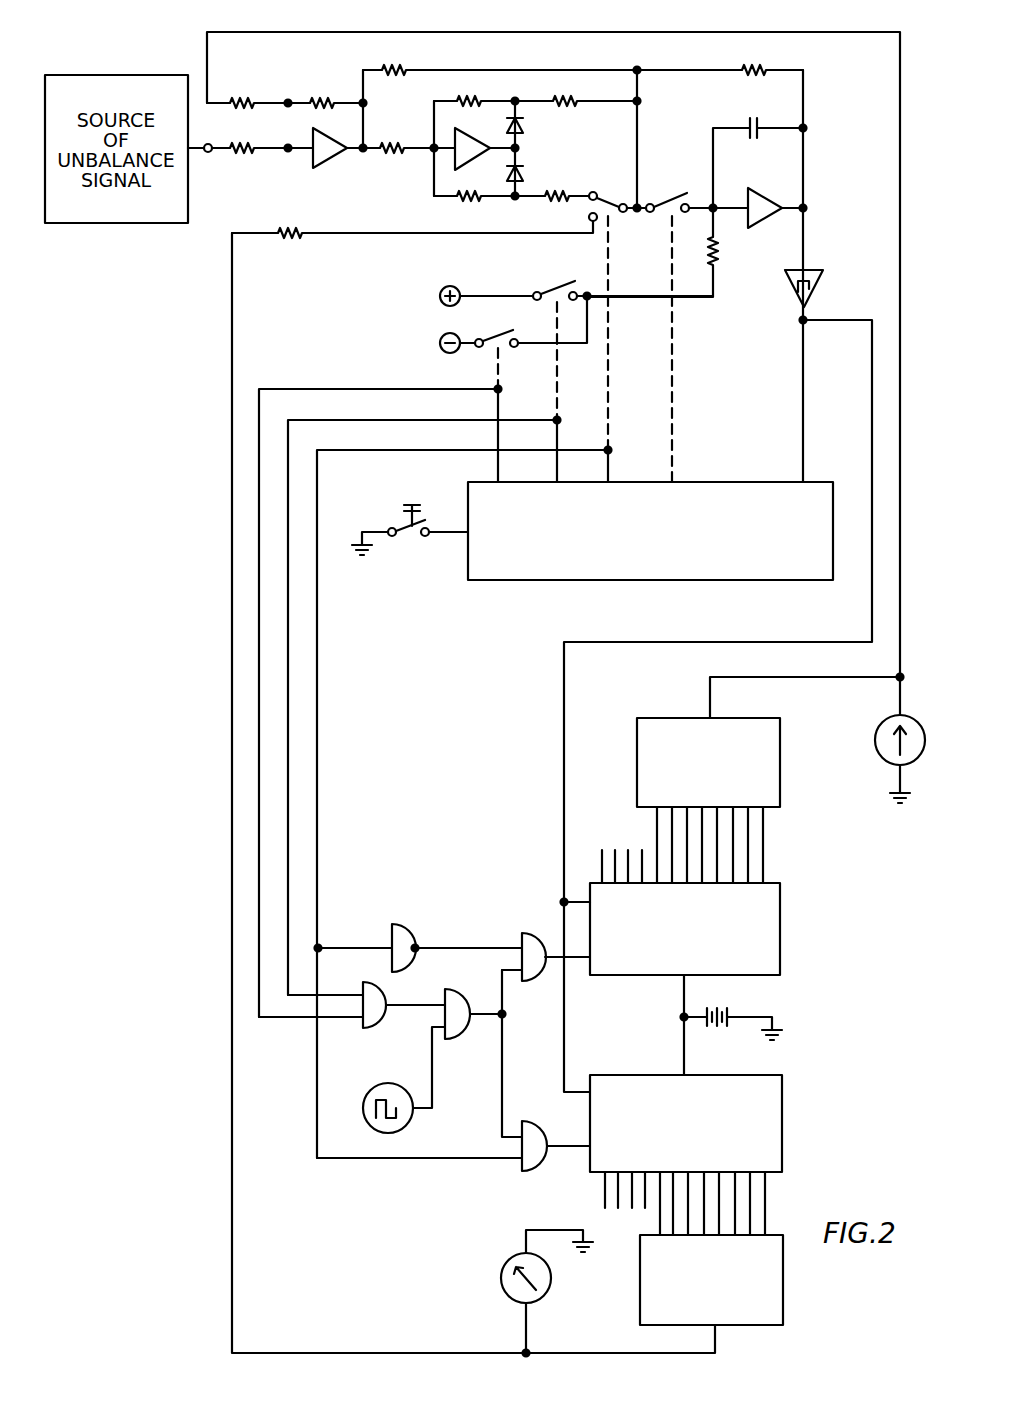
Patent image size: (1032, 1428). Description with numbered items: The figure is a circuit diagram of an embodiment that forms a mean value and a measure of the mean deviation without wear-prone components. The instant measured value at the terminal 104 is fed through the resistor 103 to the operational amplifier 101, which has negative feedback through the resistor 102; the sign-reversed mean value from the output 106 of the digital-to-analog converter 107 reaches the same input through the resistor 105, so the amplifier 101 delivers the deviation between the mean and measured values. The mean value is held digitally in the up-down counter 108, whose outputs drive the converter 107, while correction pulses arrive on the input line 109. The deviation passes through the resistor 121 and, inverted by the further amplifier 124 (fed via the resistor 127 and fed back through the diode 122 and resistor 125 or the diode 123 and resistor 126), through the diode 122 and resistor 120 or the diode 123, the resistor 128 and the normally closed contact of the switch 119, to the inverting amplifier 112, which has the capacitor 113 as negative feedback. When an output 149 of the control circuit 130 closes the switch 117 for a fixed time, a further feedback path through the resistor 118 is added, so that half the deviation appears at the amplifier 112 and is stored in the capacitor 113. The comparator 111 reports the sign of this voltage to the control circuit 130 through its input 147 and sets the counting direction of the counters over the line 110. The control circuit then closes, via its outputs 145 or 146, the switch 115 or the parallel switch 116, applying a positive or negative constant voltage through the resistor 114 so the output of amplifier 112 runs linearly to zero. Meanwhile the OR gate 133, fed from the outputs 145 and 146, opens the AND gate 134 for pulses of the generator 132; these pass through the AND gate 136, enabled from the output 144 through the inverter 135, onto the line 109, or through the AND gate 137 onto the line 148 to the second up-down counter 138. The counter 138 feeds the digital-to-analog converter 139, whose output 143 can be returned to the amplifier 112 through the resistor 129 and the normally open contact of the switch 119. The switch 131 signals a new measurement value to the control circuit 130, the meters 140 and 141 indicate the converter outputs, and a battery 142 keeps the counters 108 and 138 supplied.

The operational amplifier 101 is at (330, 160).
The resistor 102 is at (316, 100).
The resistor 103 is at (246, 153).
The terminal 104 is at (210, 144).
The resistor 105 is at (236, 100).
The output of digital-to-analog converter 106 is at (714, 714).
The digital-to-analog converter 107 is at (690, 796).
The up-down counter 108 is at (667, 961).
The input line 109 is at (580, 960).
The line 110 is at (848, 318).
The comparator 111 is at (815, 272).
The amplifier 112 is at (768, 196).
The capacitor 113 is at (748, 122).
The resistor 114 is at (716, 258).
The switch 115 is at (548, 280).
The switch 116 is at (502, 330).
The switch 117 is at (666, 200).
The resistor 118 is at (750, 68).
The switch 119 is at (612, 200).
The resistor 120 is at (562, 99).
The resistor 121 is at (392, 68).
The diode 122 is at (525, 125).
The diode 123 is at (525, 172).
The amplifier 124 is at (484, 126).
The resistor 125 is at (465, 99).
The resistor 126 is at (470, 200).
The resistor 127 is at (388, 145).
The resistor 128 is at (562, 202).
The resistor 129 is at (300, 230).
The control circuit 130 is at (607, 564).
The switch 131 is at (418, 500).
The generator 132 is at (410, 1074).
The OR gate 133 is at (382, 990).
The AND gate 134 is at (472, 984).
The inverter 135 is at (412, 930).
The AND gate 136 is at (546, 928).
The AND gate 137 is at (546, 1112).
The up-down counter 138 is at (668, 1158).
The digital-to-analog converter 139 is at (693, 1315).
The meter 140 is at (882, 720).
The meter 141 is at (552, 1278).
The battery 142 is at (732, 1012).
The output of digital-to-analog converter 143 is at (718, 1332).
The output of control circuit 144 is at (612, 480).
The output of control circuit 145 is at (561, 480).
The output of control circuit 146 is at (502, 480).
The input of control circuit 147 is at (808, 480).
The line 148 is at (568, 1144).
The output of control circuit 149 is at (676, 480).